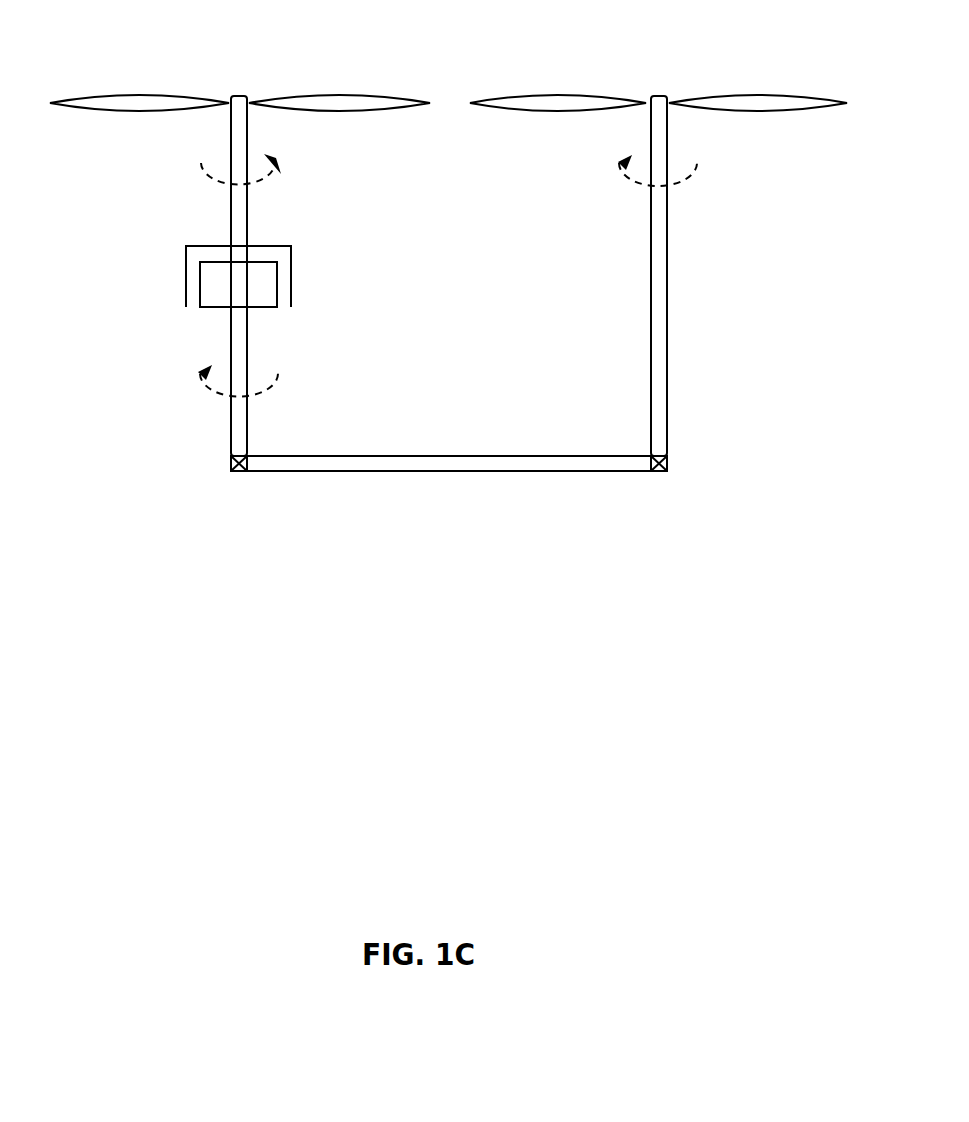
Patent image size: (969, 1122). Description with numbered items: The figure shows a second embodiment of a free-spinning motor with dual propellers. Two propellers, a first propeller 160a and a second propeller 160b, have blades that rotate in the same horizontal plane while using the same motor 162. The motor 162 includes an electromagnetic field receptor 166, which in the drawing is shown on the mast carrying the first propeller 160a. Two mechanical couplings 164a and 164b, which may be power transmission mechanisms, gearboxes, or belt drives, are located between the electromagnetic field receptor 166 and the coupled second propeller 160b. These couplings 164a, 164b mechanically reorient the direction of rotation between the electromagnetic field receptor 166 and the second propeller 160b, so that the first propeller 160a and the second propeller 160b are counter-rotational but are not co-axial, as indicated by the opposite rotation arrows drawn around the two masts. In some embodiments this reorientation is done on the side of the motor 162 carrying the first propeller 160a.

The first propeller 160a is at (142, 98).
The second propeller 160b is at (755, 98).
The motor 162 is at (170, 278).
The electromagnetic field receptor 166 is at (277, 283).
The first mechanical coupling 164a is at (230, 465).
The second mechanical coupling 164b is at (668, 465).